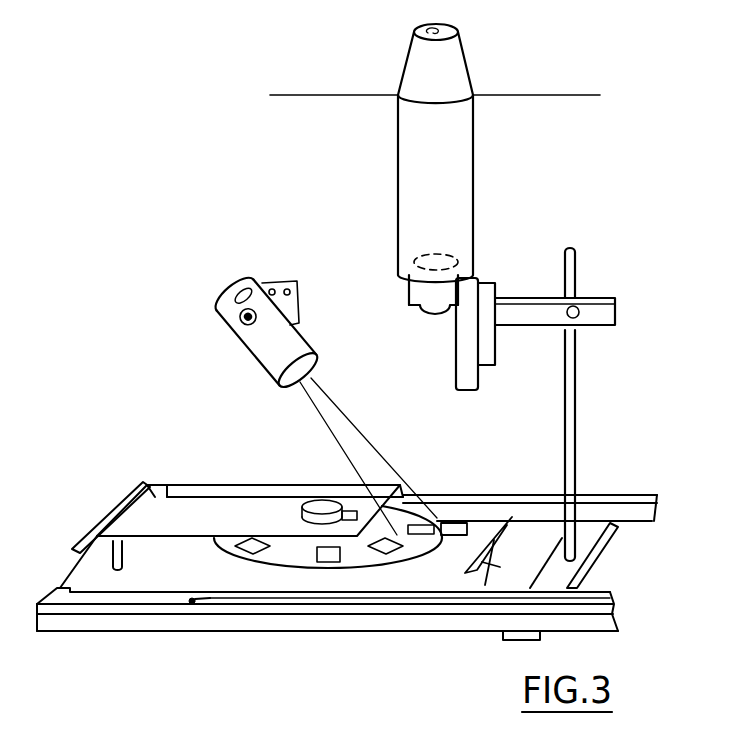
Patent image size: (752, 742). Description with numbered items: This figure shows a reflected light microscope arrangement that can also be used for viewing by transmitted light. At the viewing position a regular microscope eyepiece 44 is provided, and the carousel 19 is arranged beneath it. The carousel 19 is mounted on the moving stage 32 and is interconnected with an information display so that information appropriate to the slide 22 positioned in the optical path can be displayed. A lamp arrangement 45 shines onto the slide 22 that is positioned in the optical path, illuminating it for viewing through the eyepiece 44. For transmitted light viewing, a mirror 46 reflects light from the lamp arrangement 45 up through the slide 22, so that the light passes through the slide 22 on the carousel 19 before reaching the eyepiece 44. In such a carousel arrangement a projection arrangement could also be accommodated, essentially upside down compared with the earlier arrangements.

The microscope eyepiece 44 is at (458, 70).
The lamp arrangement 45 is at (222, 333).
The mirror 46 is at (487, 530).
The carousel 19 is at (290, 560).
The slide 22 is at (457, 536).
The moving stage 32 is at (177, 578).